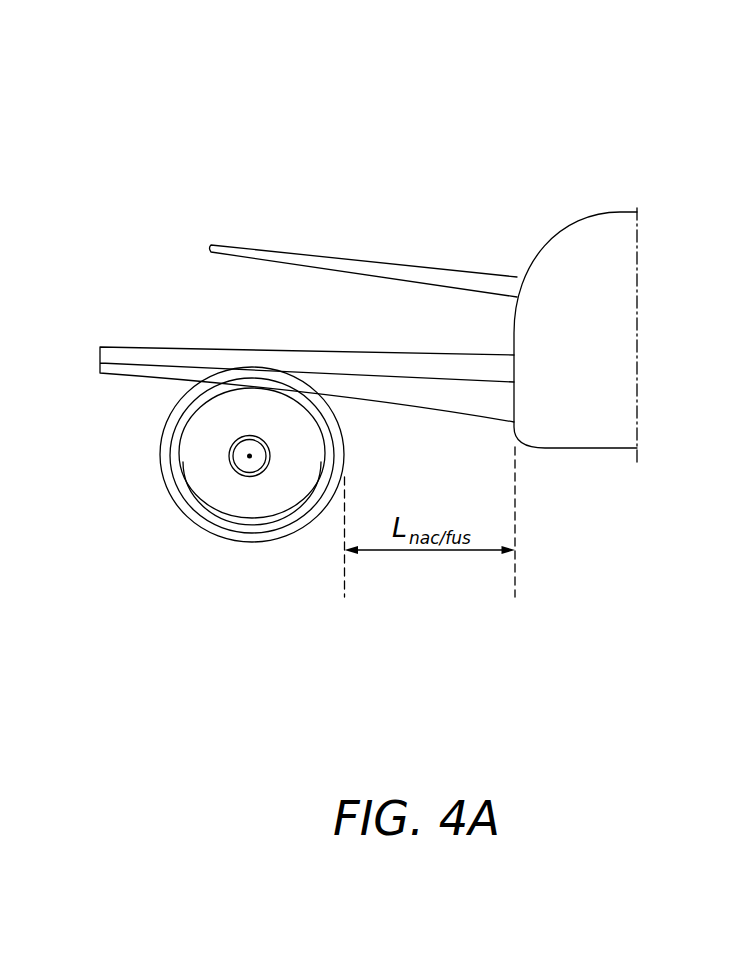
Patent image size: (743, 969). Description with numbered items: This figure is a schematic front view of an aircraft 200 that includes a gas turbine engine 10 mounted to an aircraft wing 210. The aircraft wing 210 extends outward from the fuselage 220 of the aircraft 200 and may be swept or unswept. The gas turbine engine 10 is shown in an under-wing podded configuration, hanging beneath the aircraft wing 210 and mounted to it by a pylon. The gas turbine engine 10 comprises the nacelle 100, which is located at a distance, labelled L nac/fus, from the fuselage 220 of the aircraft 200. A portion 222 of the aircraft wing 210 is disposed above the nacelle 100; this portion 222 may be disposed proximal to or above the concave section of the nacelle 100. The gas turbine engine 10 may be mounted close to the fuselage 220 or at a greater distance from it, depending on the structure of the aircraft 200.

The aircraft 200 is at (397, 265).
The fuselage 220 is at (556, 230).
The aircraft wing 210 is at (130, 347).
The portion of the aircraft wing 222 is at (337, 345).
The nacelle 100 is at (170, 497).
The gas turbine engine 10 is at (272, 560).